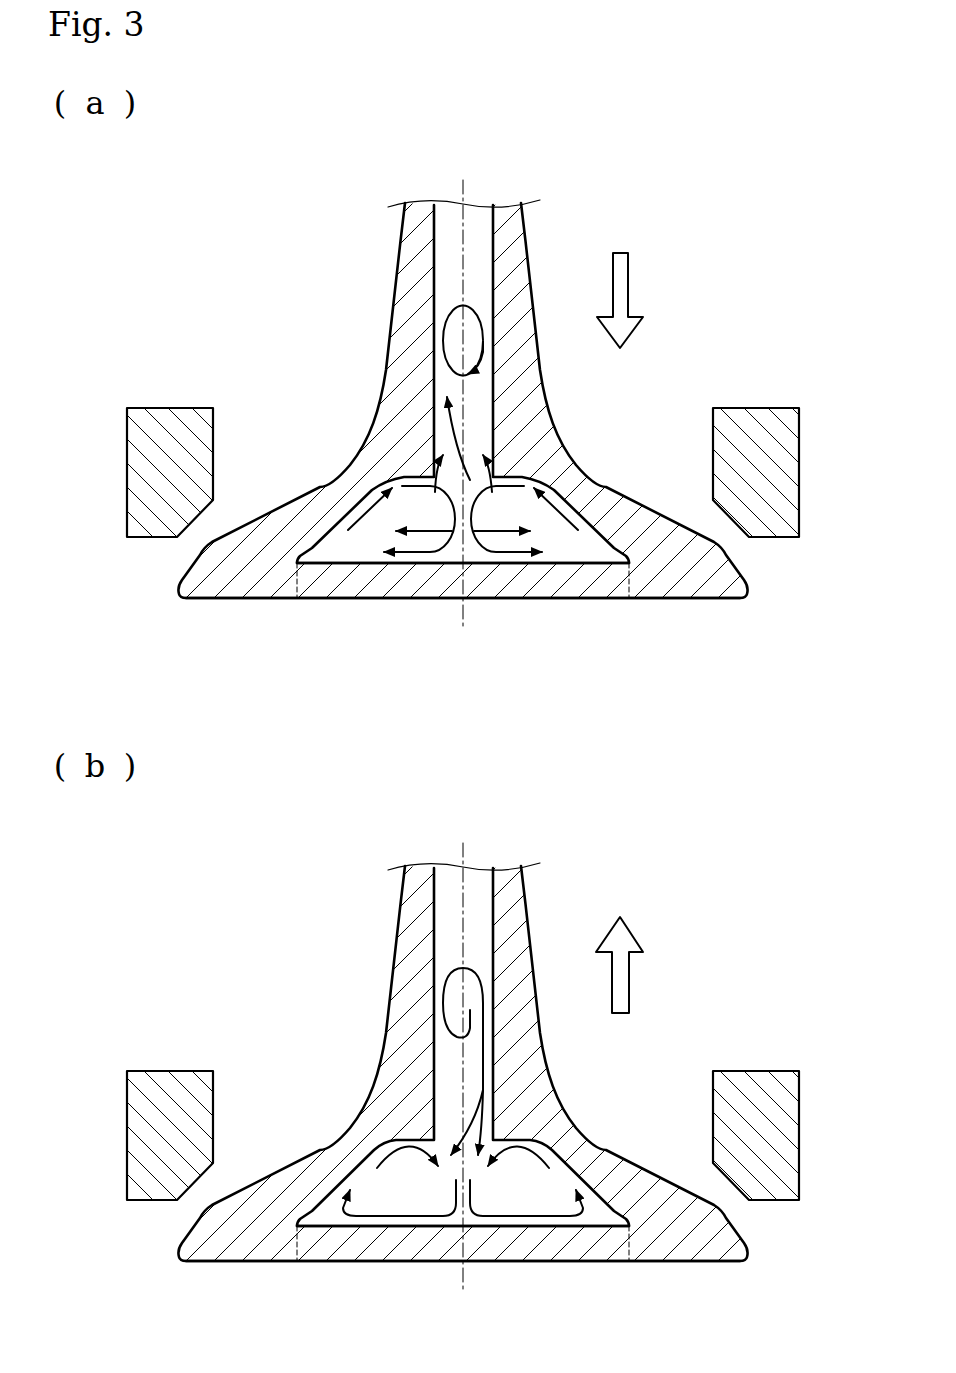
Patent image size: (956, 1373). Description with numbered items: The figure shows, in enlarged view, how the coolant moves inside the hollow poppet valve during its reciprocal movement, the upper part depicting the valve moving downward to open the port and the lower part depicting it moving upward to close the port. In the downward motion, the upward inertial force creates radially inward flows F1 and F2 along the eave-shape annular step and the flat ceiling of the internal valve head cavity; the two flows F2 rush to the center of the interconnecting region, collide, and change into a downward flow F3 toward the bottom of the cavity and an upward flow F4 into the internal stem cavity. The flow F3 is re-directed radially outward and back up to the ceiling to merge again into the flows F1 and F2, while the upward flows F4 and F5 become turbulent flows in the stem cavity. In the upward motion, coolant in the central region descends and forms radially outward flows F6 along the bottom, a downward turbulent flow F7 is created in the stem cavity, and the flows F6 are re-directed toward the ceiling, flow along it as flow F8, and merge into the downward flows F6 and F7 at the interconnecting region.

The radially inward flow F1 is at (366, 502).
The radially inward flow F2 is at (463, 519).
The downward flow F3 is at (463, 535).
The upward flow F4 is at (463, 444).
The upward flow F5 is at (463, 340).
The radially outward flow F6 is at (463, 1200).
The downward turbulent flow F7 is at (463, 1061).
The ceiling flow F8 is at (463, 1163).